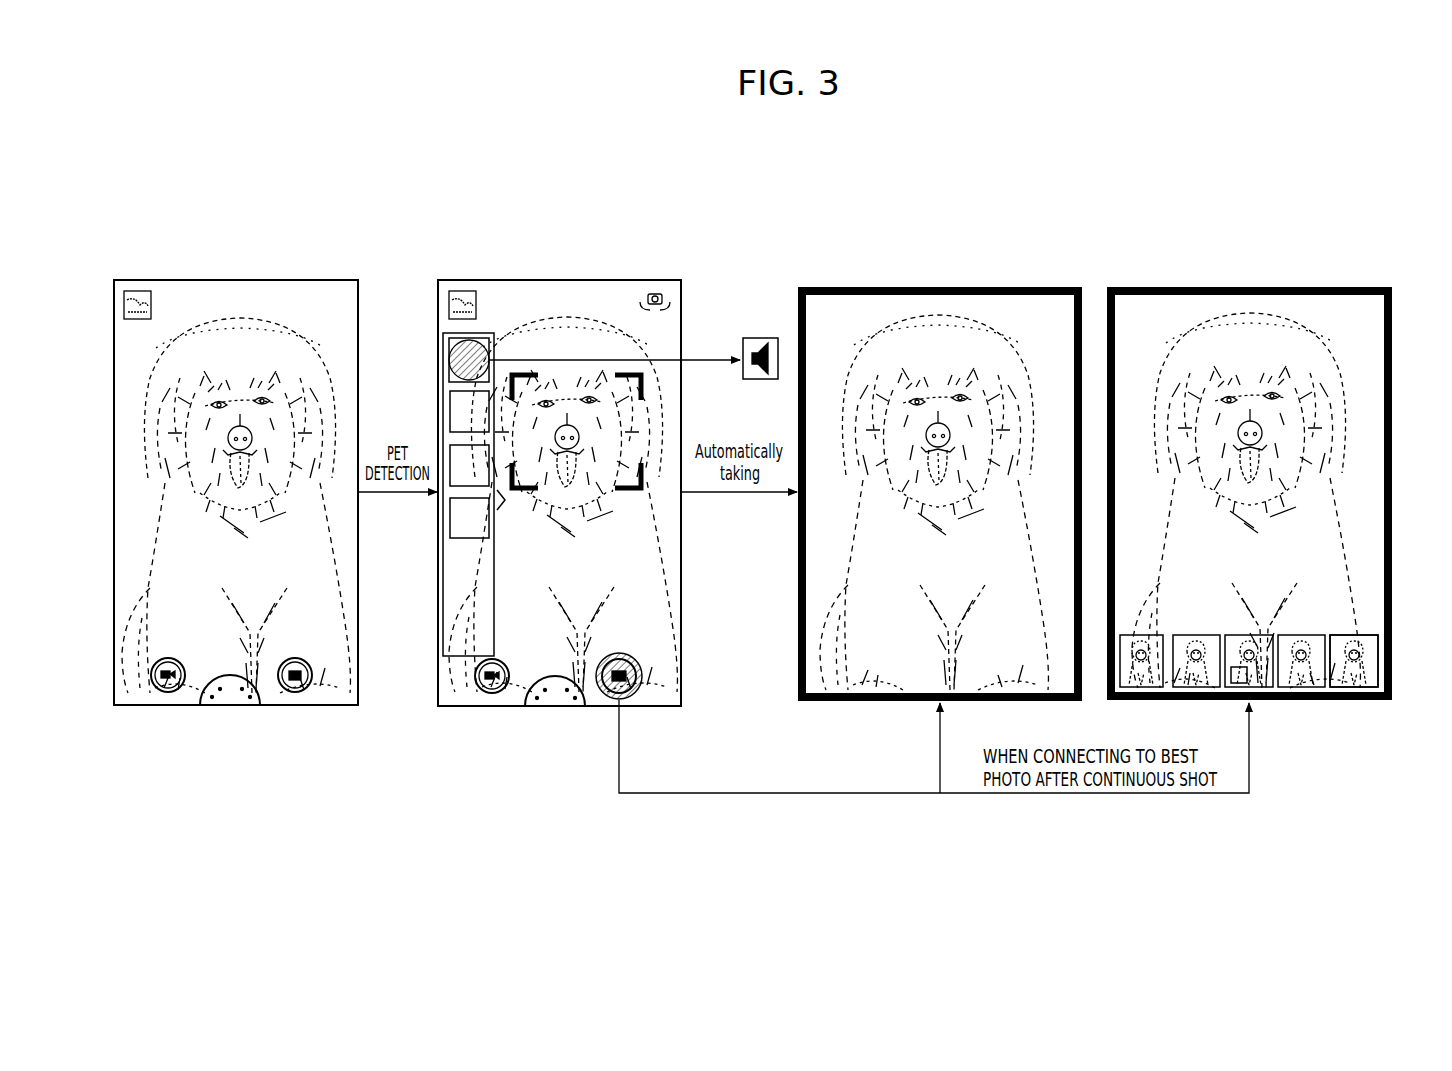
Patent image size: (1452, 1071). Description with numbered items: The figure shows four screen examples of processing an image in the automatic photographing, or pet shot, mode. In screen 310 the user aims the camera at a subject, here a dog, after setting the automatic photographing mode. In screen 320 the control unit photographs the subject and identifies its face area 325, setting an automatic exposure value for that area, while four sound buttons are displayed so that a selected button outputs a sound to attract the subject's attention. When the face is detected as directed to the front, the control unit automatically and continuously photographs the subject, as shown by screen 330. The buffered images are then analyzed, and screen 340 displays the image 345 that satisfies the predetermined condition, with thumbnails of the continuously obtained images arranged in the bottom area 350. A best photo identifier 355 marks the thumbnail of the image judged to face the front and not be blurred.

The screen 310 is at (326, 277).
The screen 320 is at (682, 273).
The face area 325 is at (642, 385).
The screen 330 is at (1050, 283).
The screen 340 is at (1256, 501).
The image 345 is at (1347, 486).
The bottom area 350 is at (1357, 688).
The best photo identifier 355 is at (1252, 683).